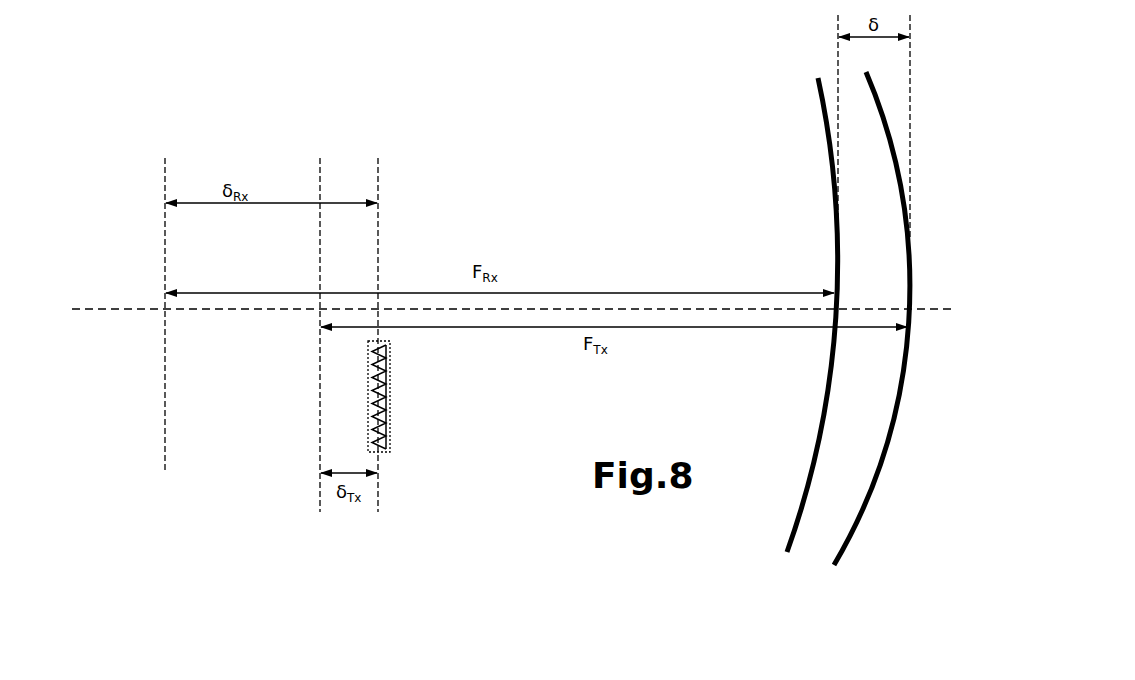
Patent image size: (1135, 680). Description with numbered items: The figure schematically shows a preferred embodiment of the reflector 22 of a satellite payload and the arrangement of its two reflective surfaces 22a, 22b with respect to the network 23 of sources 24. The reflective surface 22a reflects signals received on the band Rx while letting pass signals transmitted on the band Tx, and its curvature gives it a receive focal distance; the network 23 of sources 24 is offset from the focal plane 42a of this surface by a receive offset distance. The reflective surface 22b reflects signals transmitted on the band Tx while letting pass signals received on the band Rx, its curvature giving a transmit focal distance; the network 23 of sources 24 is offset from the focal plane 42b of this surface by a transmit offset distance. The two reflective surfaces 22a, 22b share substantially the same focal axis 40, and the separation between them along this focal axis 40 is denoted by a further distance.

The reflector 22 is at (850, 318).
The reflective surface 22a is at (828, 388).
The reflective surface 22b is at (905, 366).
The network of sources 23 is at (393, 368).
The sources 24 is at (389, 423).
The focal axis 40 is at (110, 312).
The focal plane 42a is at (165, 233).
The focal plane 42b is at (320, 249).